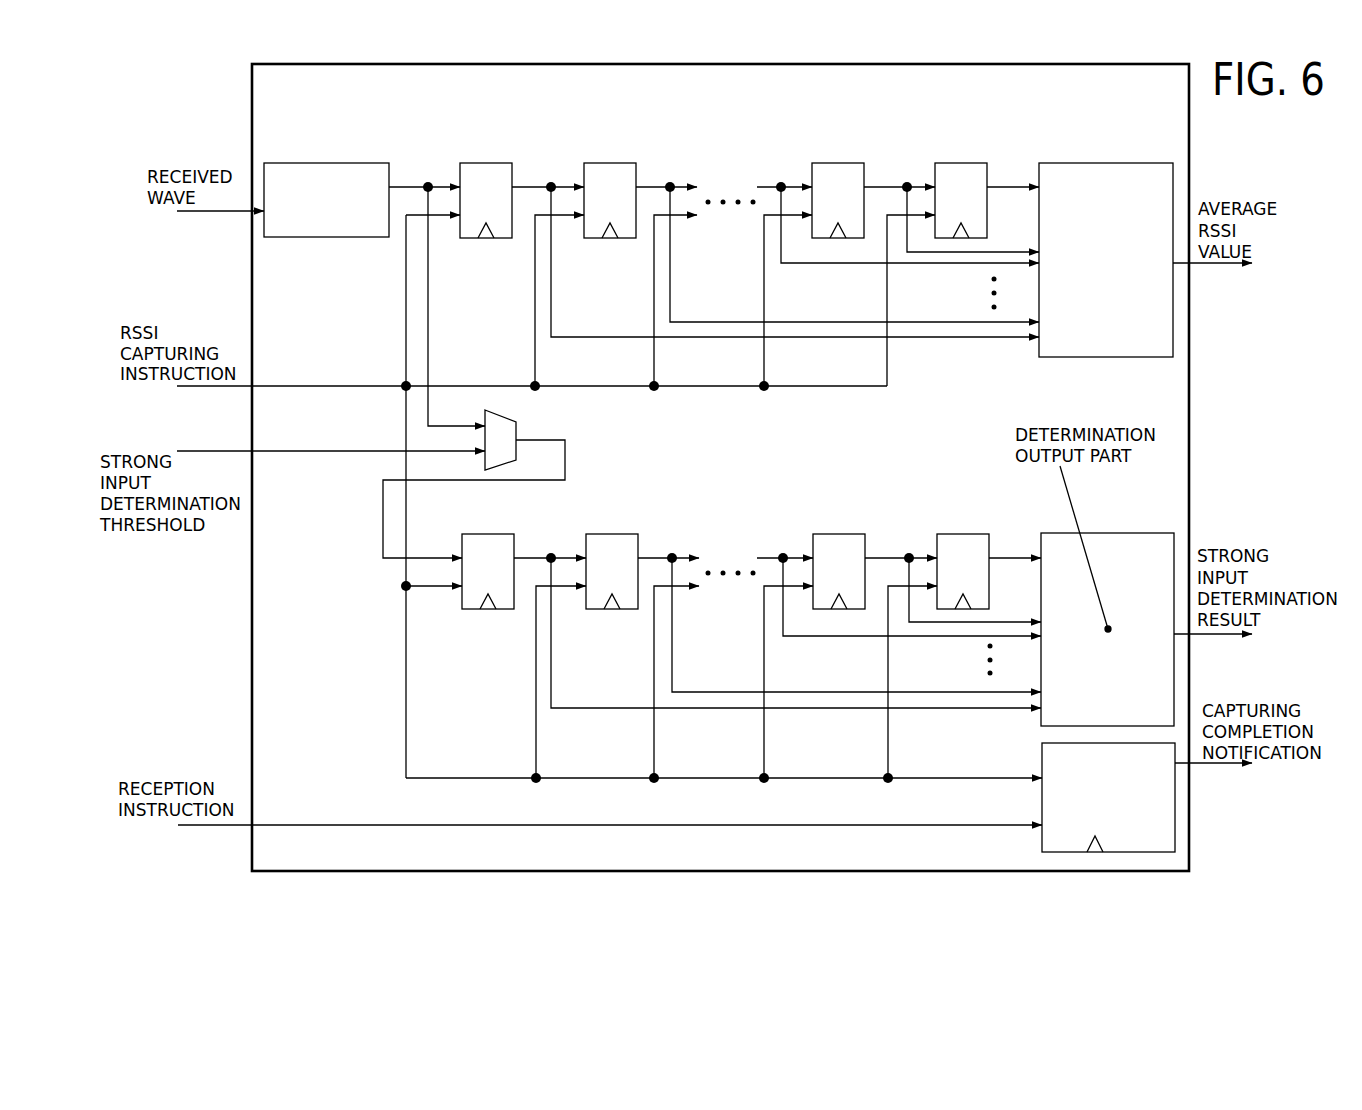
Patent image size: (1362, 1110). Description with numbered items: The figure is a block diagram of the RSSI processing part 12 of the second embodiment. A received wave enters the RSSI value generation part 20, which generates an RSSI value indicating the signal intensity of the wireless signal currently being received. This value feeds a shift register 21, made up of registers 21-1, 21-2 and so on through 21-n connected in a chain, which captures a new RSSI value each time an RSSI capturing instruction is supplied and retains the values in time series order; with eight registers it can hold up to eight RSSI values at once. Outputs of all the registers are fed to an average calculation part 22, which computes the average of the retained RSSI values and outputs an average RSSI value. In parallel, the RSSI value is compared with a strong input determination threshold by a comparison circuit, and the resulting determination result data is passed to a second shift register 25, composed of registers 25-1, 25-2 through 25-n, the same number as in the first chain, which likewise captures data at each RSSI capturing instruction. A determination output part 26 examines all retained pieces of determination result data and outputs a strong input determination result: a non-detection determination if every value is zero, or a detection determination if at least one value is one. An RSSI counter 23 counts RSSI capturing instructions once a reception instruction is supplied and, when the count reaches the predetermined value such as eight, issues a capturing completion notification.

The RSSI processing part 12 is at (252, 100).
The RSSI value generation part 20 is at (358, 163).
The shift register 21 is at (684, 150).
The register 21-1 is at (498, 163).
The register 21-2 is at (620, 163).
The register 21-n is at (968, 163).
The average calculation part 22 is at (1118, 163).
The RSSI counter 23 is at (1042, 748).
The shift register 25 is at (686, 525).
The register 25-1 is at (500, 534).
The register 25-2 is at (622, 534).
The register 25-n is at (970, 534).
The determination output part 26 is at (1120, 534).